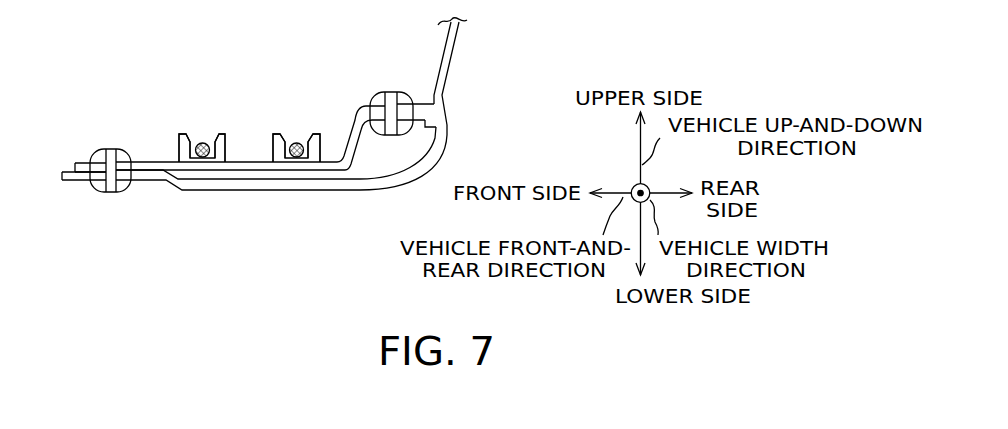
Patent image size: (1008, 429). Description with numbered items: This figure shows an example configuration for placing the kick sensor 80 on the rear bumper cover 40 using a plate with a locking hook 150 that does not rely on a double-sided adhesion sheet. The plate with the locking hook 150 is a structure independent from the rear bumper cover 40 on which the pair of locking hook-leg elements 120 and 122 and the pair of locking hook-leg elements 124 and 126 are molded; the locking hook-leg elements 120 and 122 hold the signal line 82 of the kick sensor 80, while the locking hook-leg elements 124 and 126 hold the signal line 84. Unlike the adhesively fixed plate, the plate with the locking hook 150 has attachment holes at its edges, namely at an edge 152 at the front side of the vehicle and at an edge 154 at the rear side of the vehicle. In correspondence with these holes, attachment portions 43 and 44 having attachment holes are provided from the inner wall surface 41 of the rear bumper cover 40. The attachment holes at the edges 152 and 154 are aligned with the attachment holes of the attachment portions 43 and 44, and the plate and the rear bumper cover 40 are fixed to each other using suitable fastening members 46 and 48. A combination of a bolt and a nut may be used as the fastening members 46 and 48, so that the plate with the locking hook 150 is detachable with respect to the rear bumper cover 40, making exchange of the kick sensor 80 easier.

The rear bumper cover 40 is at (449, 70).
The inner wall surface 41 is at (365, 169).
The attachment portion 43 is at (79, 176).
The attachment portion 44 is at (431, 104).
The fastening member 46 is at (112, 191).
The fastening member 48 is at (390, 93).
The kick sensor 80 is at (213, 73).
The signal line 82 is at (190, 136).
The signal line 84 is at (296, 142).
The locking hook-leg element 120 is at (172, 160).
The locking hook-leg element 122 is at (225, 137).
The locking hook-leg element 124 is at (273, 135).
The locking hook-leg element 126 is at (320, 133).
The plate with a locking hook 150 is at (155, 160).
The edge 152 is at (88, 165).
The edge 154 is at (373, 93).